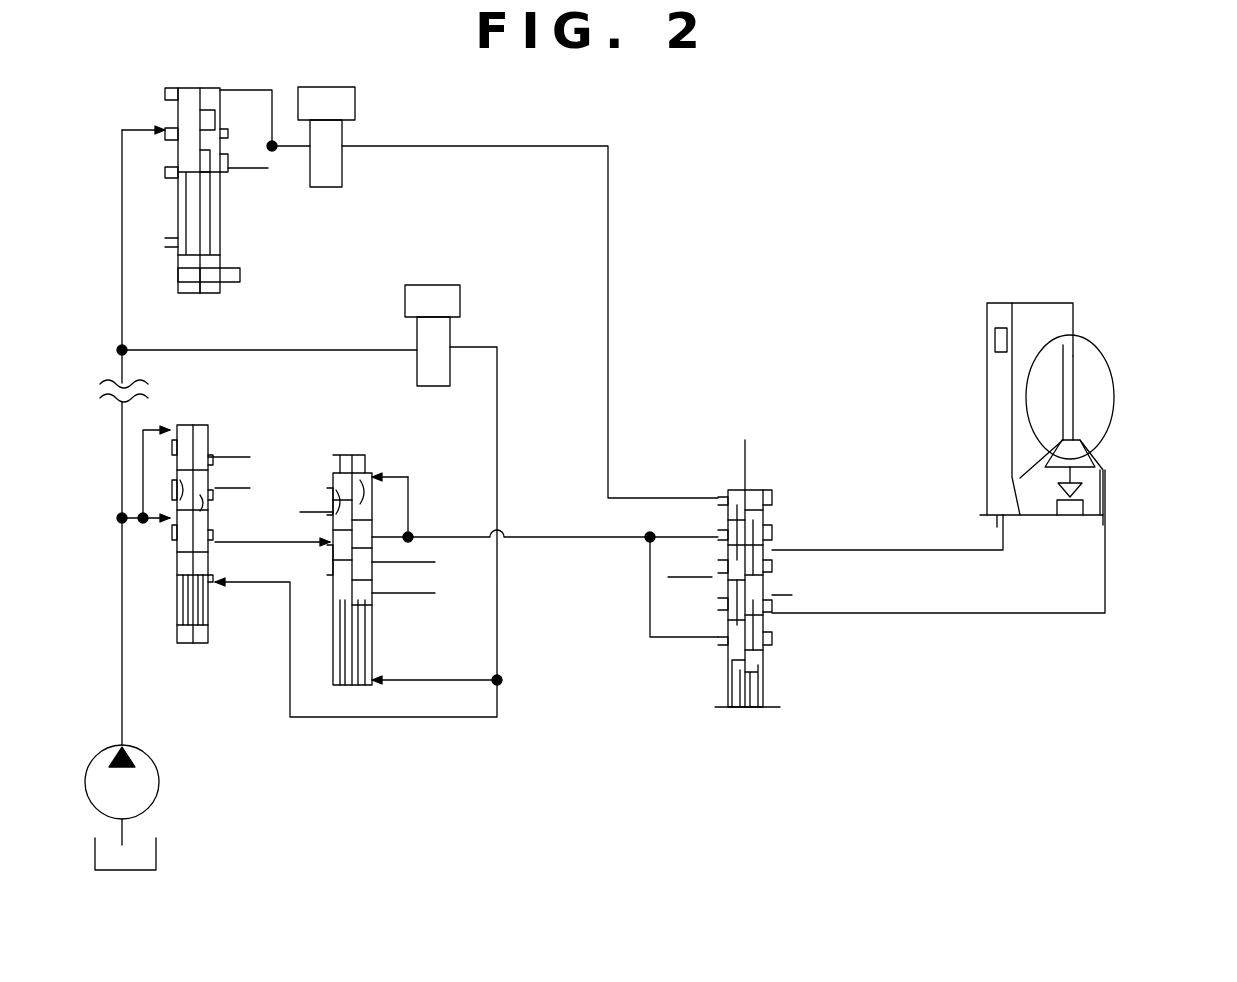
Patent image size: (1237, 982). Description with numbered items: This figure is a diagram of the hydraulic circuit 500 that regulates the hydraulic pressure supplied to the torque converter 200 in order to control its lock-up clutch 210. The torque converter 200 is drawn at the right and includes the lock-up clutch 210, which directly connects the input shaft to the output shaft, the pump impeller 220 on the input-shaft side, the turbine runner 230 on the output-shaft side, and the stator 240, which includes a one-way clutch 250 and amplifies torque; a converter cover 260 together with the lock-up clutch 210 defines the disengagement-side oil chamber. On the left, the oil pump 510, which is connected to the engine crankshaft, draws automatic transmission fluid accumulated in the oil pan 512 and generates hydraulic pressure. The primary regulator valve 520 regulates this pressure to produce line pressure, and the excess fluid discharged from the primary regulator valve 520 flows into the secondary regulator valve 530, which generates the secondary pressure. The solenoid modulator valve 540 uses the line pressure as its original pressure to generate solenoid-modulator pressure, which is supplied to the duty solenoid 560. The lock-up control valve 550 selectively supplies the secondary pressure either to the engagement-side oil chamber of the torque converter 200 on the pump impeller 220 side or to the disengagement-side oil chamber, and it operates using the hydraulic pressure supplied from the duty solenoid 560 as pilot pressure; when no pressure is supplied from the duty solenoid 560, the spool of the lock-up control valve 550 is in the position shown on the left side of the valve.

The torque converter 200 is at (1097, 330).
The lock-up clutch 210 is at (1007, 318).
The pump impeller 220 is at (1092, 444).
The turbine runner 230 is at (1045, 346).
The stator 240 is at (1090, 455).
The one-way clutch 250 is at (1061, 491).
The converter cover 260 is at (987, 354).
The hydraulic circuit 500 is at (805, 133).
The oil pump 510 is at (160, 762).
The oil pan 512 is at (158, 845).
The primary regulator valve 520 is at (188, 645).
The secondary regulator valve 530 is at (354, 456).
The solenoid modulator valve 540 is at (222, 228).
The lock-up control valve 550 is at (715, 672).
The duty solenoid 560 is at (342, 176).